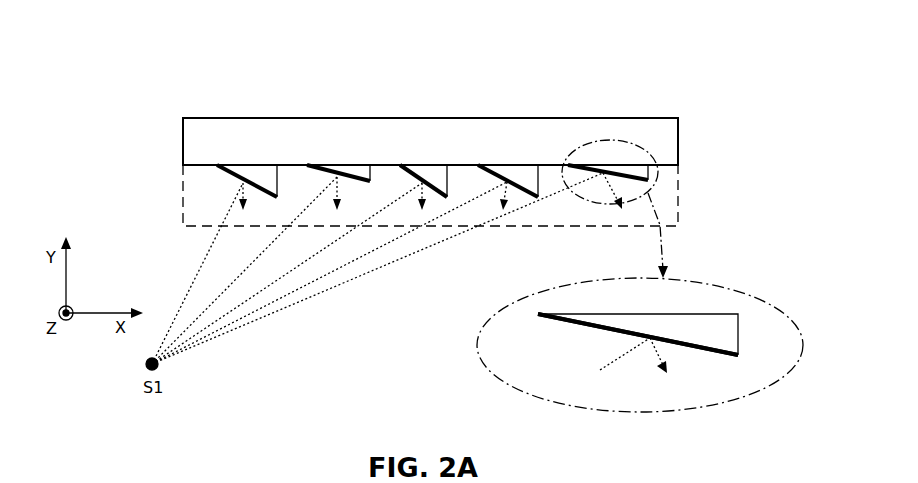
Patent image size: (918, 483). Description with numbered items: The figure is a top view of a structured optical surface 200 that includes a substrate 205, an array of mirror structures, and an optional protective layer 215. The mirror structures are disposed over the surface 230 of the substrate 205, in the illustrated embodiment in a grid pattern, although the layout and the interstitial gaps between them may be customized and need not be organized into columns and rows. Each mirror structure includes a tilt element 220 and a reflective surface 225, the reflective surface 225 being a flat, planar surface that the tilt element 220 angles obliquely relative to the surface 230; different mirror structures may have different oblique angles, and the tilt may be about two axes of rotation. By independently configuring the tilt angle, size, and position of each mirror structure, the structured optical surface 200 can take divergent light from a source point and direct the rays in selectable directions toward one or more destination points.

The structured optical surface 200 is at (652, 66).
The substrate 205 is at (430, 141).
The protective layer 215 is at (678, 210).
The tilt element 220 is at (629, 340).
The reflective surface 225 is at (593, 326).
The surface 230 is at (196, 166).